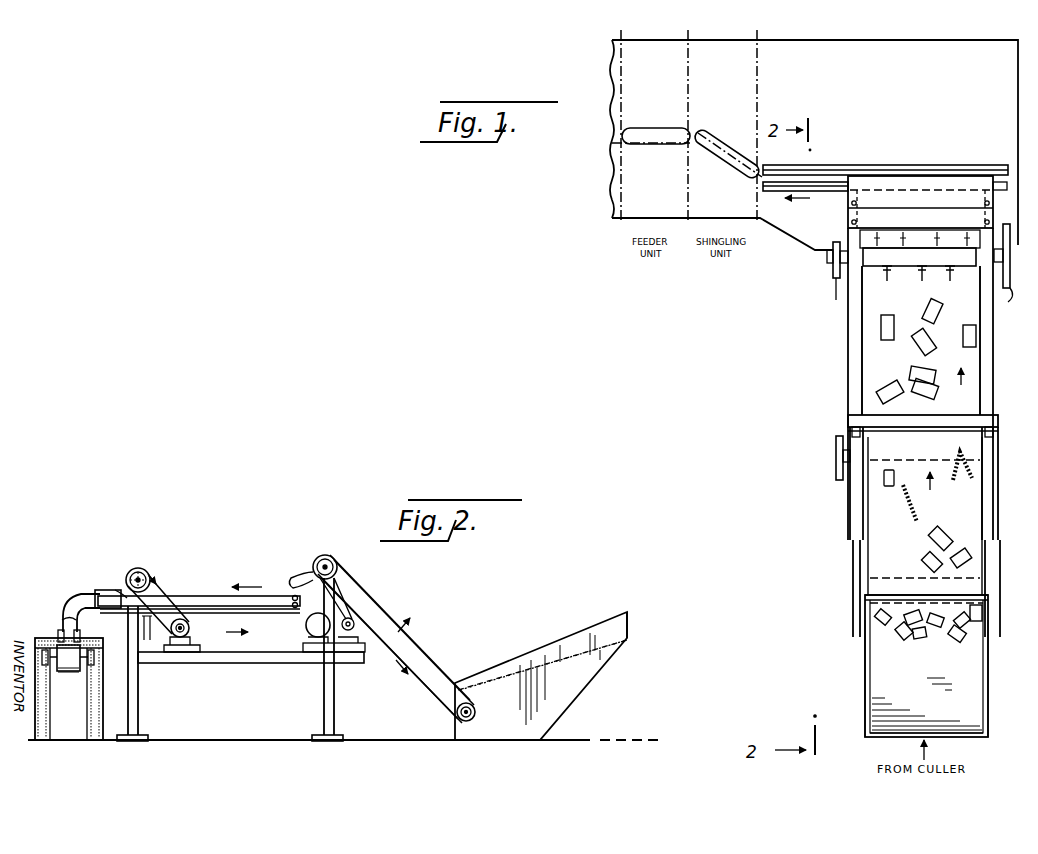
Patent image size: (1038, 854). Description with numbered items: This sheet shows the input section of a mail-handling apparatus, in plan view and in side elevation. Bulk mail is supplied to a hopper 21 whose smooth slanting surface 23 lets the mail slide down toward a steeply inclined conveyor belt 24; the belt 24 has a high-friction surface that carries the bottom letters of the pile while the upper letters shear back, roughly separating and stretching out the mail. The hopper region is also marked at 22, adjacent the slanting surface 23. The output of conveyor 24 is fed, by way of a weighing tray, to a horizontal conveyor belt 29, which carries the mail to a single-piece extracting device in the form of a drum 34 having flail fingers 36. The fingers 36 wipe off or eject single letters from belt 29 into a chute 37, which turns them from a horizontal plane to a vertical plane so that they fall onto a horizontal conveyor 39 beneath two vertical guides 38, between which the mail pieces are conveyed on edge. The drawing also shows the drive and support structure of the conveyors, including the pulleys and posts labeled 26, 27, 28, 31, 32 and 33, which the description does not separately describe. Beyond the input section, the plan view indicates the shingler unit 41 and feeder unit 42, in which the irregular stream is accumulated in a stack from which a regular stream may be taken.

In FIG. 1, the hopper 21 is at (840, 653).
In FIG. 2, the hopper 21 is at (586, 681).
In FIG. 1, the hopper bottom / feed inlet 22 is at (886, 726).
In FIG. 2, the hopper bottom / feed inlet 22 is at (556, 666).
In FIG. 1, the smooth slanting surface 23 is at (862, 671).
In FIG. 2, the smooth slanting surface 23 is at (628, 615).
In FIG. 1, the conveyor belt 24 is at (870, 501).
In FIG. 2, the conveyor belt 24 is at (426, 640).
In FIG. 2, the motor 26 is at (306, 630).
In FIG. 1, the drive belt / pulley 27 is at (836, 464).
In FIG. 2, the drive belt / pulley 27 is at (374, 636).
In FIG. 1, the upper conveyor pulley / cross bar 28 is at (848, 429).
In FIG. 2, the upper conveyor pulley / cross bar 28 is at (298, 580).
In FIG. 1, the horizontal conveyor belt 29 is at (868, 334).
In FIG. 2, the horizontal conveyor belt 29 is at (201, 596).
In FIG. 2, the lower pulley 31 is at (190, 630).
In FIG. 1, the support post / side pulley 32 is at (1012, 302).
In FIG. 2, the support post / side pulley 32 is at (128, 614).
In FIG. 1, the belt / side pulley 33 is at (831, 279).
In FIG. 2, the belt / side pulley 33 is at (166, 595).
In FIG. 1, the drum 34 is at (972, 236).
In FIG. 2, the drum 34 is at (137, 568).
In FIG. 1, the flail fingers 36 is at (888, 274).
In FIG. 2, the flail fingers 36 is at (144, 558).
In FIG. 1, the chute 37 is at (848, 207).
In FIG. 2, the chute 37 is at (72, 604).
In FIG. 1, the vertical guides 38 is at (1015, 177).
In FIG. 2, the vertical guides 38 is at (62, 620).
In FIG. 2, the horizontal conveyor 39 is at (55, 637).
In FIG. 1, the shingler unit 41 is at (726, 47).
In FIG. 2, the shingler unit 41 is at (72, 672).
In FIG. 1, the feeder unit 42 is at (659, 47).